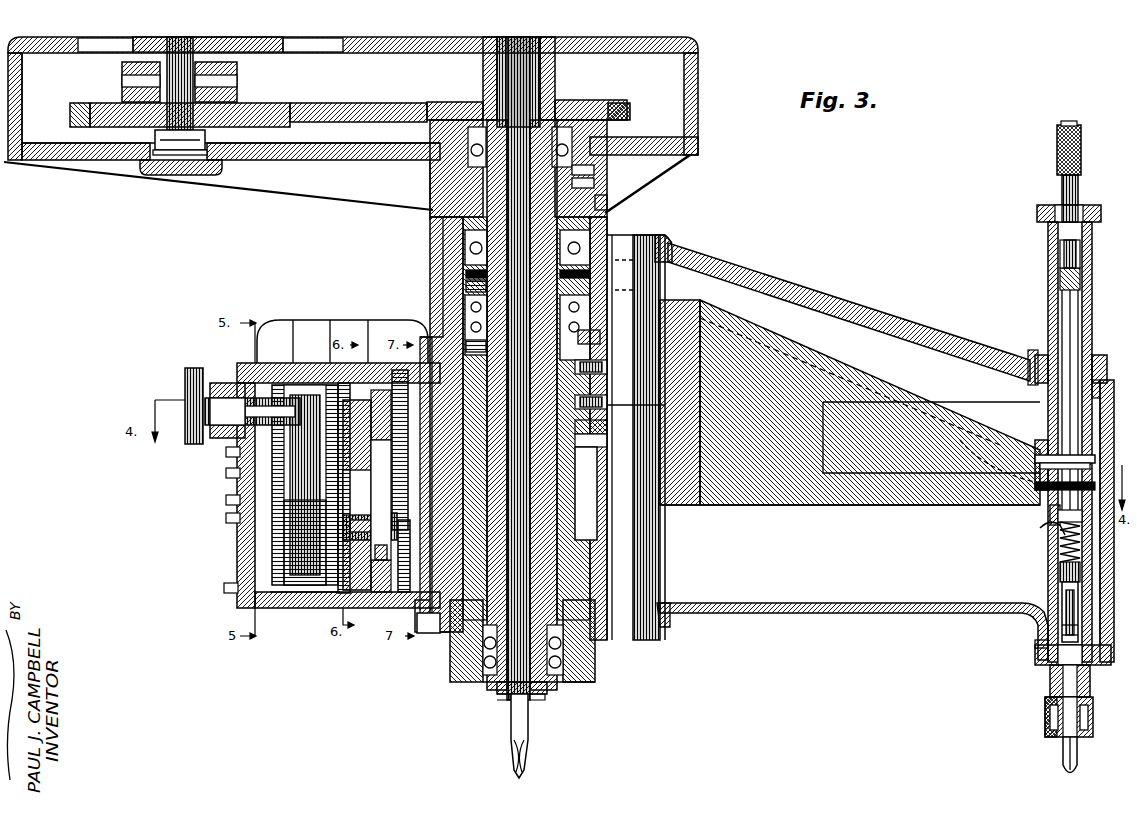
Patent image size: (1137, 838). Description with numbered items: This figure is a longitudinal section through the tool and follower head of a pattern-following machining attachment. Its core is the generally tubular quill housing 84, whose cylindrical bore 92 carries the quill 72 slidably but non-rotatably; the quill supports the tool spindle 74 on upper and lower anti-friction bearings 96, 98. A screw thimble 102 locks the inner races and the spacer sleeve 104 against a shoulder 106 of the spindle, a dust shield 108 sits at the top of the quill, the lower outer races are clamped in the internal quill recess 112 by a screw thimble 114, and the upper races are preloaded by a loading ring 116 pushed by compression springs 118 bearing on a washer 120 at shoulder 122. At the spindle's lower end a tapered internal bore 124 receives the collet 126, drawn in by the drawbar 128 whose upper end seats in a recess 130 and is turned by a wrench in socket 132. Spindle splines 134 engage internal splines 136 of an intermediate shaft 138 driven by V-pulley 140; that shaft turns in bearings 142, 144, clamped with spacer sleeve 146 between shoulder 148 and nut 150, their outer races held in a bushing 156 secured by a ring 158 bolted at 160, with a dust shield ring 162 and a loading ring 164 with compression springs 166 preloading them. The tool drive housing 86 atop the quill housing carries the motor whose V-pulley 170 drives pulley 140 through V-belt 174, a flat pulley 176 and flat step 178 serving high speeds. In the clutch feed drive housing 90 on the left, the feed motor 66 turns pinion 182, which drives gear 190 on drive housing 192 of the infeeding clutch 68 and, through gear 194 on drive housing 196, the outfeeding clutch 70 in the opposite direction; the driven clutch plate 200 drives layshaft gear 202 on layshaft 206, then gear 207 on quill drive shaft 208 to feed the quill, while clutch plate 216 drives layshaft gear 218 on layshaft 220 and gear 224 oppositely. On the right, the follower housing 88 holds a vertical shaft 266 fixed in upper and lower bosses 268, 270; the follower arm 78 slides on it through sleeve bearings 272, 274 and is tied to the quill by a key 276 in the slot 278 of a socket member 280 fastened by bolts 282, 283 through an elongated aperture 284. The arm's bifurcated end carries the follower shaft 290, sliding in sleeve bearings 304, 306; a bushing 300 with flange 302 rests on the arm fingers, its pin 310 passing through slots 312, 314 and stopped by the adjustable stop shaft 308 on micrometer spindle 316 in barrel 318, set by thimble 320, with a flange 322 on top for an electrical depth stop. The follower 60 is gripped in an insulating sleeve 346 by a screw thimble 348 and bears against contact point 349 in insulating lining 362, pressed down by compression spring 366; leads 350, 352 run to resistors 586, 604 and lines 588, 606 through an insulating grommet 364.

The follower 60 is at (1064, 760).
The tool and follower feed motor 66 is at (275, 330).
The infeeding electromagnetic clutch 68 is at (330, 390).
The outfeeding electromagnetic clutch 70 is at (310, 600).
The quill 72 is at (598, 625).
The tool spindle 74 is at (548, 700).
The follower arm 78 is at (830, 370).
The quill housing 84 is at (372, 570).
The tool drive housing 86 is at (702, 115).
The follower housing 88 is at (765, 262).
The clutch feed drive housing 90 is at (224, 590).
The cylindrical bore 92 is at (560, 648).
The upper anti-friction bearings 96 is at (450, 310).
The lower anti-friction bearings 98 is at (575, 665).
The screw thimble 102 is at (450, 292).
The spacer sleeve 104 is at (448, 625).
The shoulder 106 is at (505, 690).
The dust shield 108 is at (640, 295).
The internal quill recess 112 is at (455, 660).
The screw thimble 114 is at (560, 688).
The loading ring 116 is at (425, 355).
The compression springs 118 is at (640, 380).
The washer 120 is at (660, 415).
The shoulder 122 is at (398, 410).
The tapered internal bore 124 is at (515, 700).
The collet 126 is at (537, 702).
The drawbar 128 is at (612, 570).
The recess 130 is at (430, 118).
The socket 132 is at (520, 112).
The spindle splines 134 is at (620, 215).
The internal splines 136 is at (465, 235).
The intermediate shaft 138 is at (595, 185).
The V-pulley 140 is at (590, 100).
The upper bearing 142 is at (600, 165).
The lower bearing 144 is at (465, 250).
The spacer sleeve 146 is at (620, 200).
The shoulder 148 is at (465, 270).
The nut 150 is at (483, 60).
The bushing 156 is at (440, 182).
The ring 158 is at (395, 108).
The bolt location 160 is at (620, 118).
The dust shield ring 162 is at (592, 225).
The loading ring 164 is at (400, 168).
The compression springs 166 is at (597, 175).
The V-pulley 170 is at (90, 103).
The V-belt 174 is at (310, 103).
The flat pulley 176 is at (120, 72).
The flat step 178 is at (483, 80).
The pinion 182 is at (265, 385).
The gear 190 is at (230, 452).
The drive housing of upper clutch 192 is at (226, 473).
The gear 194 is at (232, 523).
The drive housing of lower clutch 196 is at (226, 500).
The driven clutch plate 200 is at (352, 400).
The layshaft gear 202 is at (365, 420).
The layshaft 206 is at (305, 542).
The gear 207 is at (385, 430).
The quill drive shaft 208 is at (345, 525).
The clutch plate 216 is at (290, 595).
The layshaft gear 218 is at (320, 595).
The layshaft 220 is at (398, 560).
The gear 224 is at (390, 595).
The vertical shaft 266 is at (690, 255).
The upper boss 268 is at (680, 240).
The lower boss 270 is at (670, 622).
The sleeve bearing 272 is at (680, 310).
The sleeve bearing 274 is at (668, 505).
The key 276 is at (607, 445).
The slot 278 is at (605, 420).
The socket member 280 is at (605, 365).
The bolt 282 is at (600, 340).
The bolt 283 is at (610, 475).
The aperture 284 is at (598, 530).
The follower shaft 290 is at (1050, 300).
The bushing 300 is at (1040, 460).
The flange 302 is at (1050, 415).
The upper sleeve bearing 304 is at (1040, 360).
The lower sleeve bearing 306 is at (1045, 672).
The adjustable stop shaft 308 is at (1040, 475).
The pin 310 is at (1040, 492).
The slot 312 is at (1035, 450).
The slot 314 is at (960, 440).
The micrometer spindle 316 is at (1060, 255).
The micrometer barrel 318 is at (1037, 215).
The micrometer thimble 320 is at (1060, 150).
The flange 322 is at (1062, 198).
The insulating sleeve 346 is at (1048, 710).
The screw thimble 348 is at (1050, 725).
The contact point 349 is at (1040, 655).
The lead 350 is at (1060, 648).
The lead 352 is at (1060, 635).
The insulating lining 362 is at (1060, 625).
The insulating grommet 364 is at (1048, 540).
The compression spring 366 is at (1058, 548).
The resistor 586 is at (1058, 612).
The line 588 is at (1040, 528).
The resistor 604 is at (1040, 600).
The line 606 is at (1050, 520).